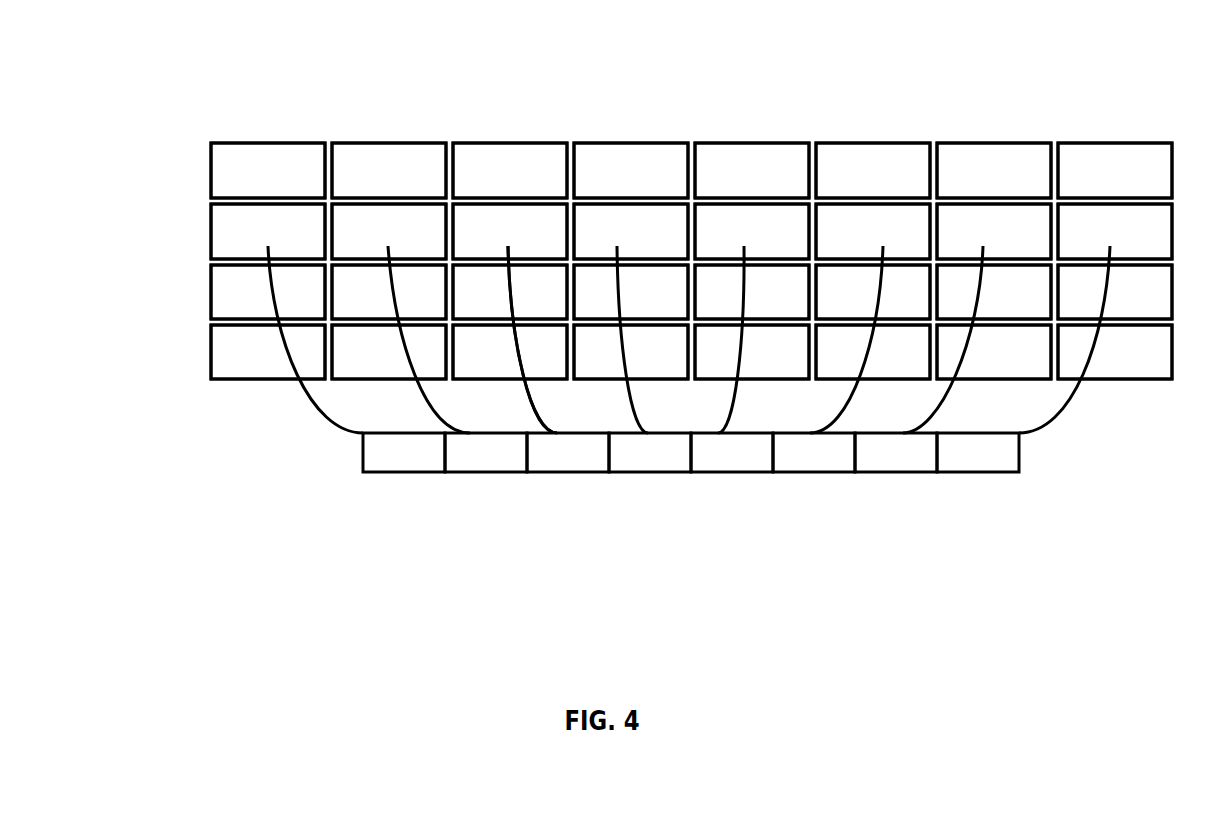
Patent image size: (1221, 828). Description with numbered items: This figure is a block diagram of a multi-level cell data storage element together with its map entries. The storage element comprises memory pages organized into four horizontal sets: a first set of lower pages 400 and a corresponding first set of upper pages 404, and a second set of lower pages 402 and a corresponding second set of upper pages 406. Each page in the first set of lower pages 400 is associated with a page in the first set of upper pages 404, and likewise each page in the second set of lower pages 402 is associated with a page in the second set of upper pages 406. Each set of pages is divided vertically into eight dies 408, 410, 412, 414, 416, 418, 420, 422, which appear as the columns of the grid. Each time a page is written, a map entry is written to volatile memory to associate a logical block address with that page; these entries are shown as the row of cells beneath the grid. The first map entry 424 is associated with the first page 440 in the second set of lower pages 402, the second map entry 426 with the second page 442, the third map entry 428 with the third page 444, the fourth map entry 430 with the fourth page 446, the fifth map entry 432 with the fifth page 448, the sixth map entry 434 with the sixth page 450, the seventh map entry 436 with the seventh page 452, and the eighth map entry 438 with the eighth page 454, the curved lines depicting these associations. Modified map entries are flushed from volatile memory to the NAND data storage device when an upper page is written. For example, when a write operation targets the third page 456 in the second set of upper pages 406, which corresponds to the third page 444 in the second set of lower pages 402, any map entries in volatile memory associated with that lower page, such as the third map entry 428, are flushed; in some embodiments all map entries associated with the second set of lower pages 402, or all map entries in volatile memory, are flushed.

The first set of lower pages 400 is at (172, 178).
The second set of lower pages 402 is at (172, 240).
The first set of upper pages 404 is at (172, 300).
The second set of upper pages 406 is at (172, 360).
The die 408 is at (265, 106).
The die 410 is at (380, 106).
The die 412 is at (503, 106).
The die 414 is at (620, 106).
The die 416 is at (743, 106).
The die 418 is at (858, 106).
The die 420 is at (981, 106).
The die 422 is at (1097, 106).
The first map entry 424 is at (404, 452).
The second map entry 426 is at (486, 452).
The third map entry 428 is at (568, 452).
The fourth map entry 430 is at (650, 452).
The fifth map entry 432 is at (732, 452).
The sixth map entry 434 is at (814, 452).
The seventh map entry 436 is at (896, 452).
The eighth map entry 438 is at (978, 452).
The first page 440 is at (307, 325).
The second page 442 is at (420, 325).
The third page 444 is at (524, 325).
The fourth page 446 is at (630, 325).
The fifth page 448 is at (744, 325).
The sixth page 450 is at (850, 325).
The seventh page 452 is at (956, 325).
The eighth page 454 is at (1075, 325).
The third page 456 is at (546, 365).